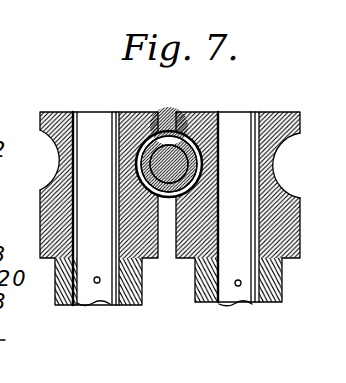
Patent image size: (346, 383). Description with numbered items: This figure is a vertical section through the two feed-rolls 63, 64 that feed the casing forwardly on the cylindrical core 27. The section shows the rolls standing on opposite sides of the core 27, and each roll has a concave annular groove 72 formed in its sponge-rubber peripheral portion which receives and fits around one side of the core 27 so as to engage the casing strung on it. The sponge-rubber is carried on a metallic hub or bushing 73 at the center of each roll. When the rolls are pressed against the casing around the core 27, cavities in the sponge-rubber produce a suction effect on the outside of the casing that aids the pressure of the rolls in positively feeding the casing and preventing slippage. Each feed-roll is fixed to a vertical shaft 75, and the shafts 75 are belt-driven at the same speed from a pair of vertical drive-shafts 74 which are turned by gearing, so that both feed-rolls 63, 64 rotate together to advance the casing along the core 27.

The feed-roll 63 is at (137, 111).
The feed-roll 64 is at (285, 112).
The core 27 is at (166, 131).
The concave annular groove 72 is at (279, 167).
The metallic hub or bushing 73 is at (134, 264).
The vertical shaft 74 is at (105, 299).
The vertical shaft 75 is at (252, 303).